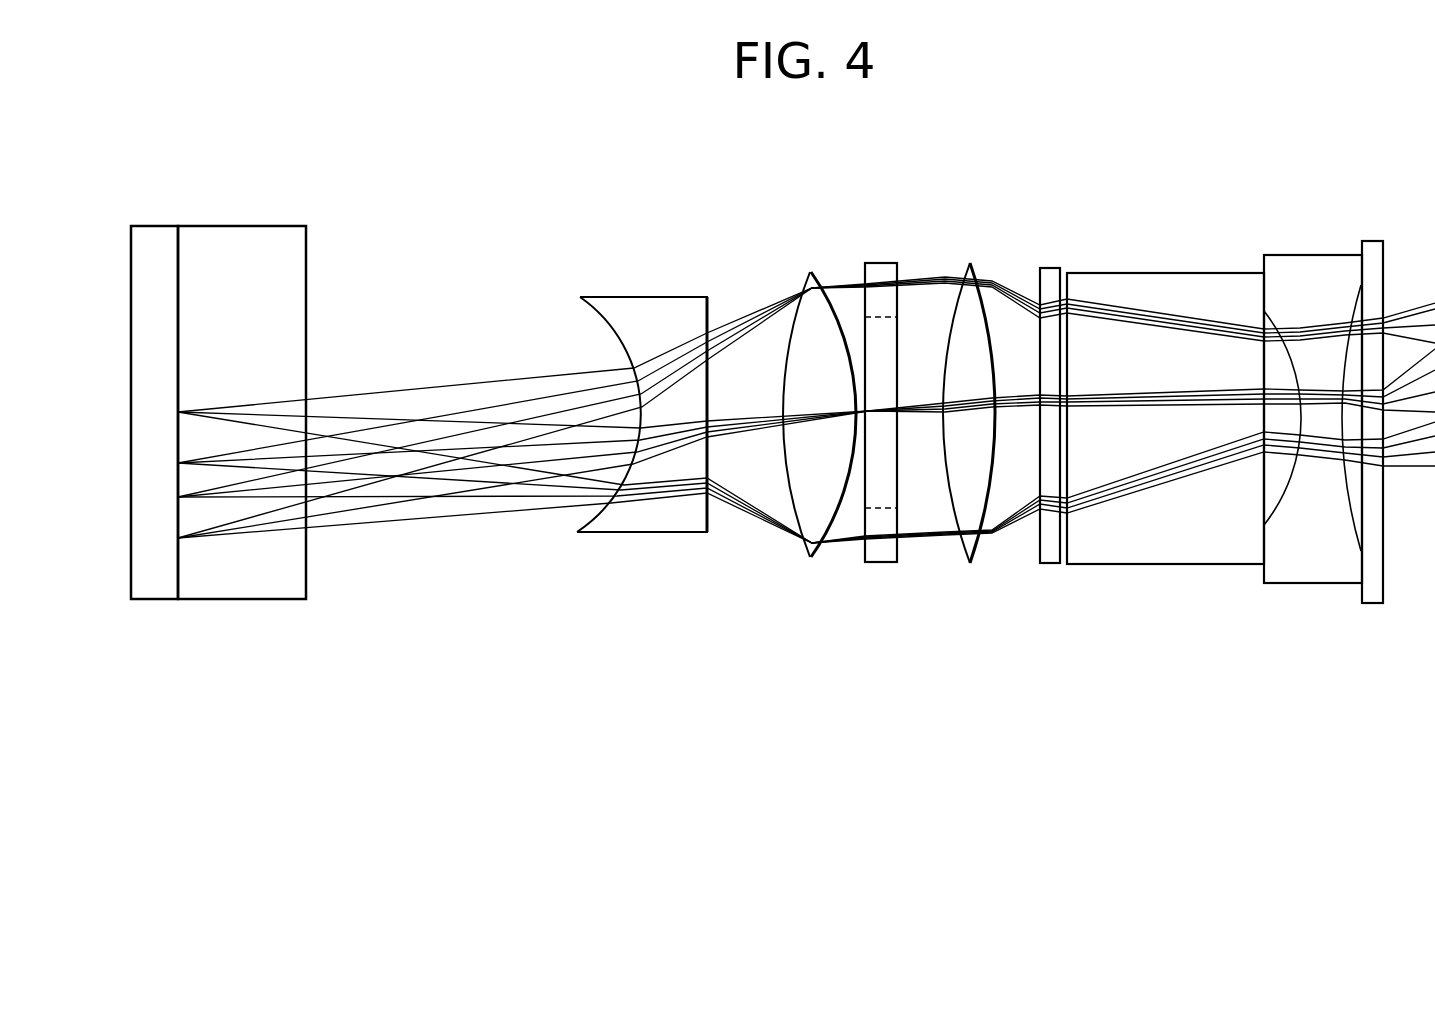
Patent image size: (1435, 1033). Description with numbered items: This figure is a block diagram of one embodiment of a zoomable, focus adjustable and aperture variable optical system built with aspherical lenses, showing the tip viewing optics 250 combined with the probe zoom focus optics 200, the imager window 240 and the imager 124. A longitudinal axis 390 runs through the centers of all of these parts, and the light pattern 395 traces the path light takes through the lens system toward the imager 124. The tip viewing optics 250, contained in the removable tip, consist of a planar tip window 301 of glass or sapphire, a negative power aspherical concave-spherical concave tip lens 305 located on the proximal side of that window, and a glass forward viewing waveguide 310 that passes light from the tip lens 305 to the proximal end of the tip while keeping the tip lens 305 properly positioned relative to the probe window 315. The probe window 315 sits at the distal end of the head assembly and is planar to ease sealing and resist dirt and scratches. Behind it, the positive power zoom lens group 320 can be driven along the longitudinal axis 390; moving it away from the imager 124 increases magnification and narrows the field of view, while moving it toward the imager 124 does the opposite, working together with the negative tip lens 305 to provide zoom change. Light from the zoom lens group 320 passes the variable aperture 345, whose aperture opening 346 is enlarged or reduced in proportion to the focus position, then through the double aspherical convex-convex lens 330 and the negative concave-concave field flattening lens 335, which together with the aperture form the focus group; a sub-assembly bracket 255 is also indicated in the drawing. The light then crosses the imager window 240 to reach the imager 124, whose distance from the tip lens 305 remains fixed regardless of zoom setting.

The imager 124 is at (168, 226).
The imager window 240 is at (256, 226).
The longitudinal axis 390 is at (342, 410).
The light pattern 395 is at (428, 519).
The field flattening lens 335 is at (644, 297).
The convex-convex lens 330 is at (810, 272).
The variable aperture 345 is at (922, 411).
The aperture opening 346 is at (922, 473).
The zoom lens group 320 is at (968, 263).
The probe window 315 is at (1050, 268).
The waveguide 310 is at (1168, 273).
The tip lens 305 is at (1298, 255).
The tip window 301 is at (1372, 241).
The lens sub-assembly 255 is at (778, 451).
The probe zoom focus optics 200 is at (820, 488).
The tip viewing optics 250 is at (1231, 424).